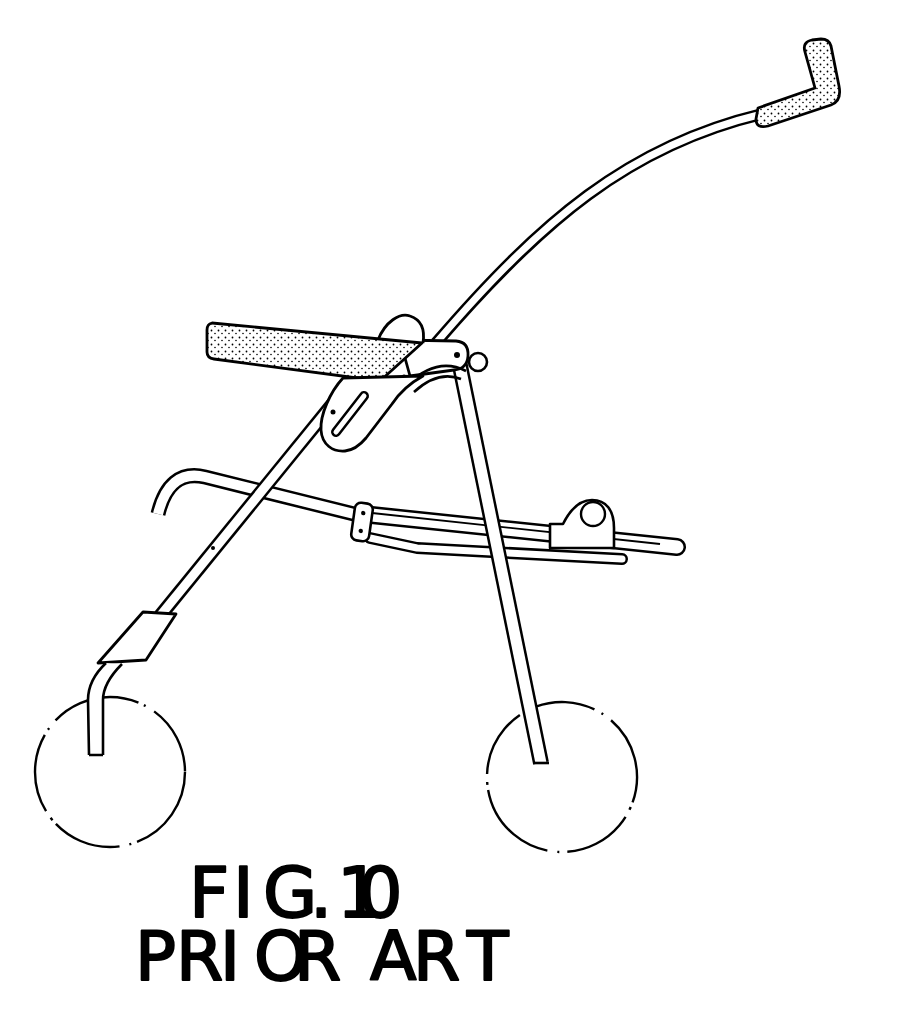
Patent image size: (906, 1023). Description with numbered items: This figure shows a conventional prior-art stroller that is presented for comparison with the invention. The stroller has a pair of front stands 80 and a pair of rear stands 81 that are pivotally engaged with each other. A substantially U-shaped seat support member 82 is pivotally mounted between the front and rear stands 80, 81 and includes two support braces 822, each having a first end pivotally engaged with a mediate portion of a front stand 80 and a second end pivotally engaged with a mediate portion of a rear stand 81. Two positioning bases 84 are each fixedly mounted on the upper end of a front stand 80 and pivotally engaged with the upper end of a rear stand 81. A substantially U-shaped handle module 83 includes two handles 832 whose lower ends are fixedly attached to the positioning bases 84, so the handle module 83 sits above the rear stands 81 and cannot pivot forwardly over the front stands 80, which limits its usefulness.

The front stands 80 is at (290, 449).
The rear stands 81 is at (477, 450).
The seat support member 82 is at (304, 533).
The support braces 822 is at (398, 541).
The handle module 83 is at (638, 187).
The handles 832 is at (554, 219).
The positioning bases 84 is at (404, 381).